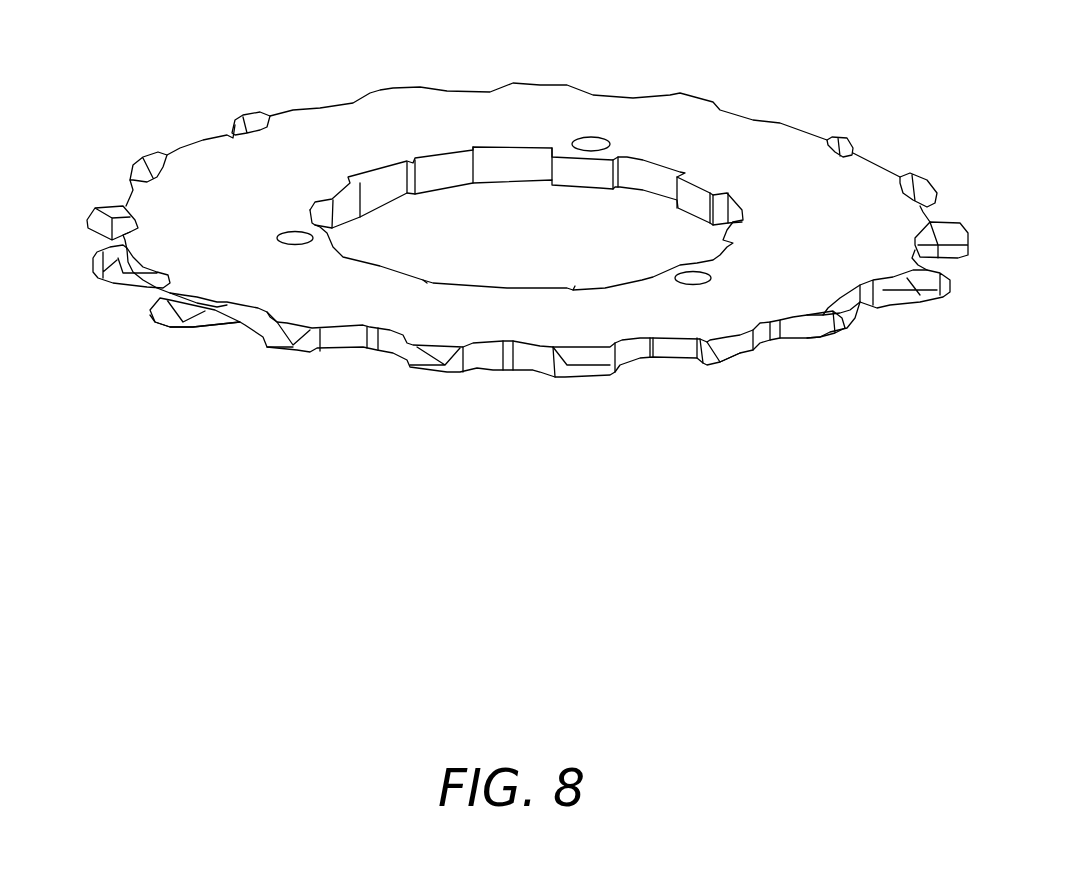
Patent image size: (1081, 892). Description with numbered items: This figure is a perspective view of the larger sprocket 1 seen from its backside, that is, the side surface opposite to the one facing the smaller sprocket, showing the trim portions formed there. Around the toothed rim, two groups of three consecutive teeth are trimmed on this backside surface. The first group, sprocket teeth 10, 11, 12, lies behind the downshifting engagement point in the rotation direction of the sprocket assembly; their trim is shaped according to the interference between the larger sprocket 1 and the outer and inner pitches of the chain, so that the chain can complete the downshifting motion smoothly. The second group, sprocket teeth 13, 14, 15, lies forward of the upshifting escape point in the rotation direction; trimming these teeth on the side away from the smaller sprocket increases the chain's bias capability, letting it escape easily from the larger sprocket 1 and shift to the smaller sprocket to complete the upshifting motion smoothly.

The larger sprocket 1 is at (527, 110).
The sprocket tooth of larger sprocket 10 is at (198, 310).
The sprocket tooth of larger sprocket 11 is at (113, 262).
The sprocket tooth of larger sprocket 12 is at (112, 205).
The sprocket tooth of larger sprocket 13 is at (853, 317).
The sprocket tooth of larger sprocket 14 is at (927, 275).
The sprocket tooth of larger sprocket 15 is at (945, 235).